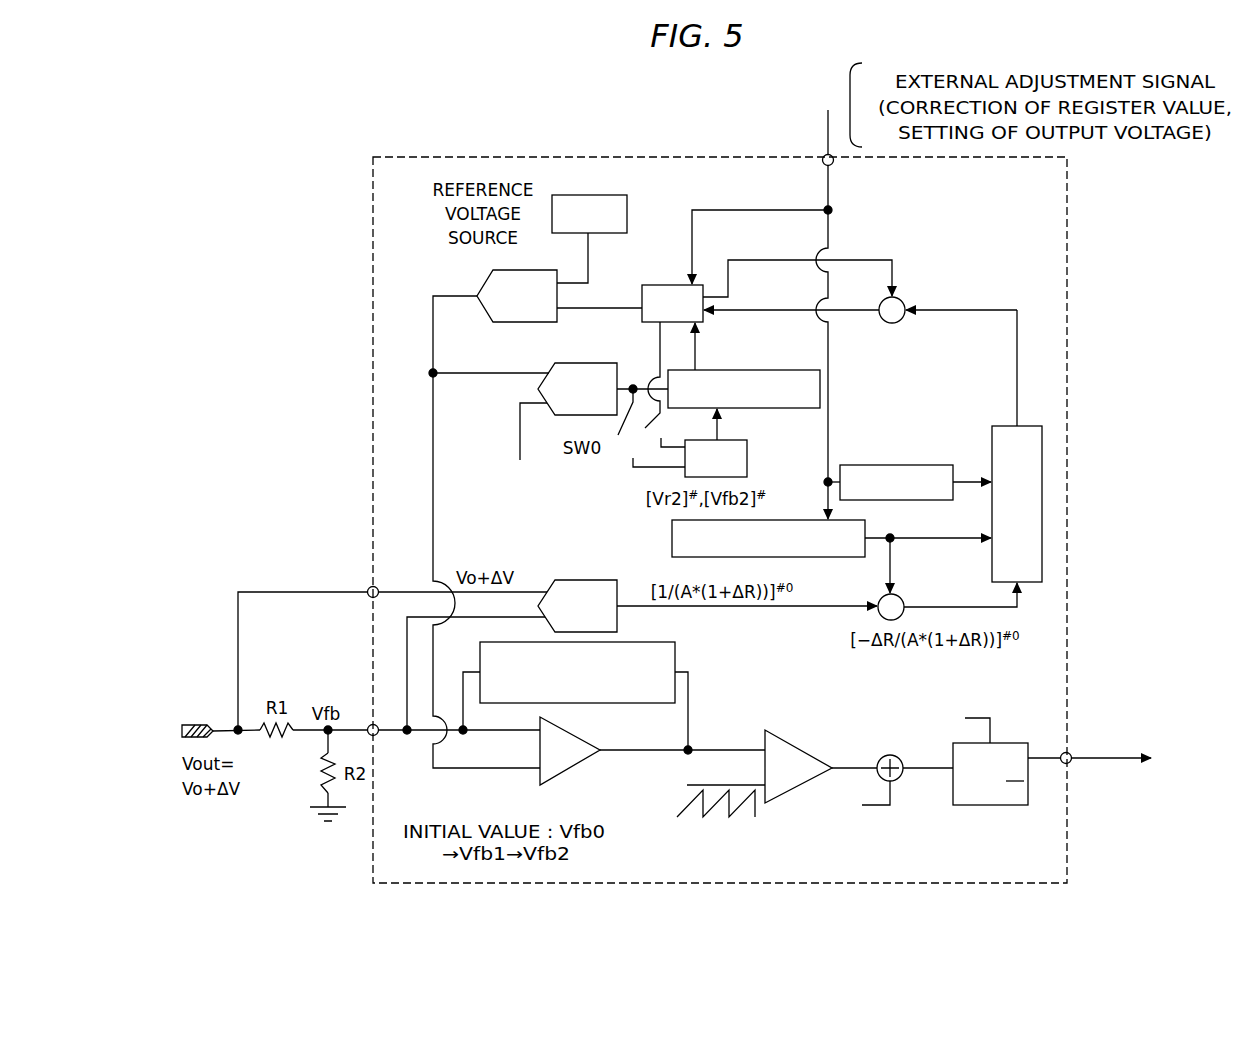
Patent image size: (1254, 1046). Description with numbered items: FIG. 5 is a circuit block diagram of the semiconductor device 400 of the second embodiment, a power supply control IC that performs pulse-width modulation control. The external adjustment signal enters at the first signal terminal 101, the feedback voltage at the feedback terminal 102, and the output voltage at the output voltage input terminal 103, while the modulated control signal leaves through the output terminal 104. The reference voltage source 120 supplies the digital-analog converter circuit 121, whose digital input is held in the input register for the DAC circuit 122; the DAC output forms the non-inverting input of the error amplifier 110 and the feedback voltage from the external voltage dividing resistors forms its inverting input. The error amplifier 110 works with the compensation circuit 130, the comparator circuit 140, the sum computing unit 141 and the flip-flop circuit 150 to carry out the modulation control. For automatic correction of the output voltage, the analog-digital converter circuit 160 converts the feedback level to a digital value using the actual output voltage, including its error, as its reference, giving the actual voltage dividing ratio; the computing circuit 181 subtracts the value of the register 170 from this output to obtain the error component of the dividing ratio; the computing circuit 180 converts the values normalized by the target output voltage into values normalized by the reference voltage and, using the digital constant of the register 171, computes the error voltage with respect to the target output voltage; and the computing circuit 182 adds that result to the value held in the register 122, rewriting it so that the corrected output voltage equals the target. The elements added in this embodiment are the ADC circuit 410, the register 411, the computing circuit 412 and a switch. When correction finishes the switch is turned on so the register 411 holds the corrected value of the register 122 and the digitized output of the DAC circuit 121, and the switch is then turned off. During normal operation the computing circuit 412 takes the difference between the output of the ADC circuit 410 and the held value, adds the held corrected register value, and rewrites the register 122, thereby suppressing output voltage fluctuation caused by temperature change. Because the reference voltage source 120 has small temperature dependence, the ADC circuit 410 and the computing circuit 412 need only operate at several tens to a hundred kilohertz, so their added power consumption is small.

The switching regulator control circuit 400 is at (532, 157).
The first signal terminal 101 is at (824, 153).
The Vfb terminal 102 is at (370, 725).
The Vo input terminal 103 is at (368, 587).
The PWM output terminal 104 is at (1072, 766).
The error amplifier 110 is at (586, 763).
The reference voltage source 120 is at (629, 214).
The digital-analog converter circuit 121 is at (507, 324).
The input register for the DAC circuit 122 is at (664, 283).
The compensation circuit 130 is at (675, 655).
The comparator circuit 140 is at (808, 751).
The sum computing unit 141 is at (890, 754).
The flip-flop circuit 150 is at (990, 806).
The analog-digital converter circuit 160 is at (585, 579).
The register 170 is at (671, 537).
The register 171 is at (940, 464).
The computing circuit 180 is at (1031, 425).
The computing circuit 181 is at (904, 600).
The computing circuit 182 is at (892, 324).
The ADC circuit 410 is at (590, 362).
The register 411 is at (747, 461).
The computing circuit 412 is at (757, 369).